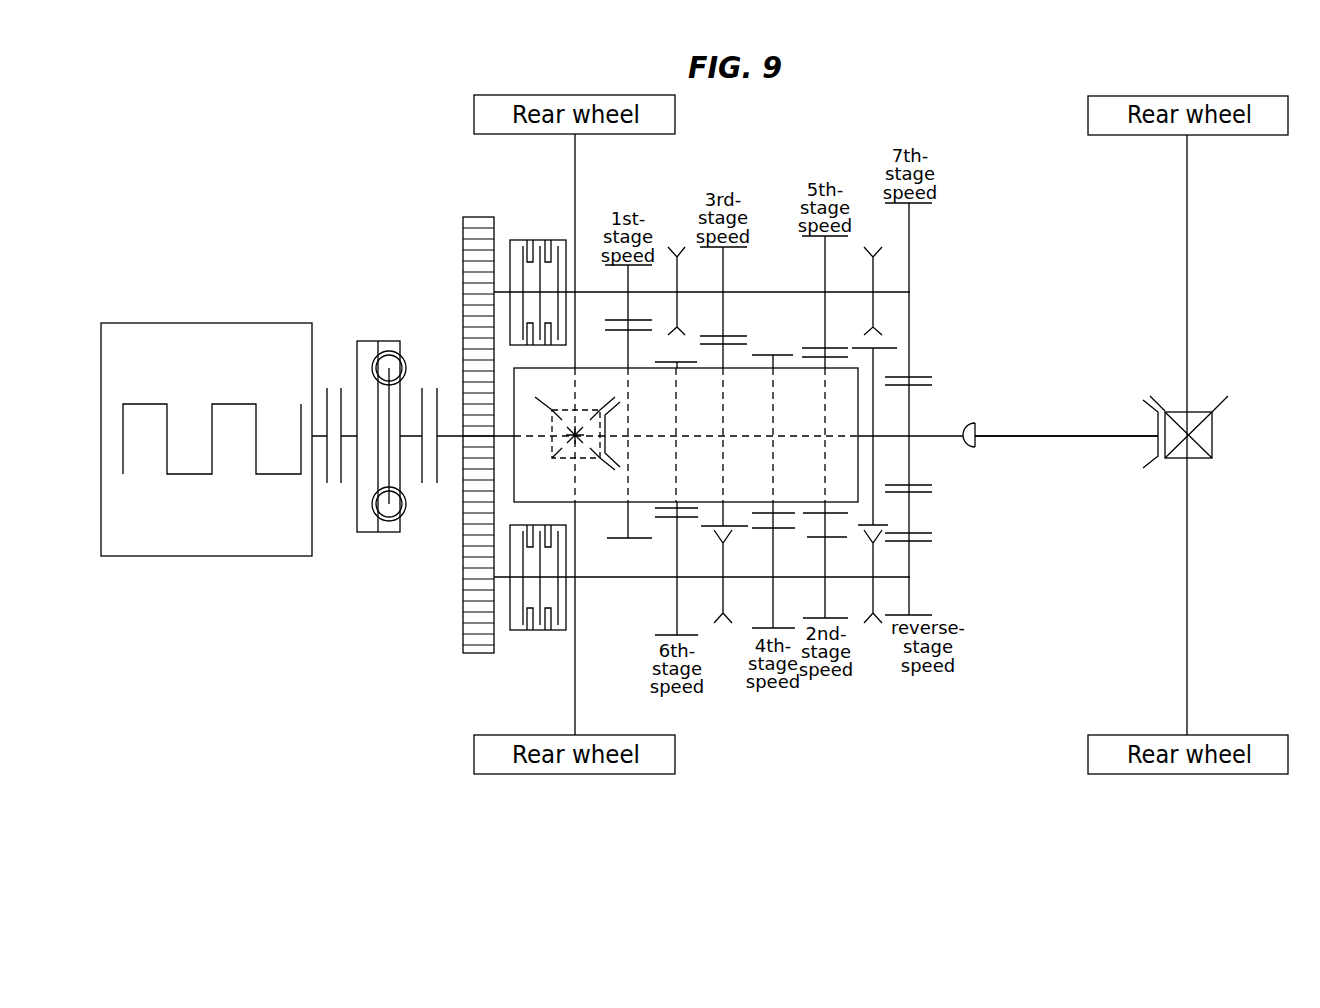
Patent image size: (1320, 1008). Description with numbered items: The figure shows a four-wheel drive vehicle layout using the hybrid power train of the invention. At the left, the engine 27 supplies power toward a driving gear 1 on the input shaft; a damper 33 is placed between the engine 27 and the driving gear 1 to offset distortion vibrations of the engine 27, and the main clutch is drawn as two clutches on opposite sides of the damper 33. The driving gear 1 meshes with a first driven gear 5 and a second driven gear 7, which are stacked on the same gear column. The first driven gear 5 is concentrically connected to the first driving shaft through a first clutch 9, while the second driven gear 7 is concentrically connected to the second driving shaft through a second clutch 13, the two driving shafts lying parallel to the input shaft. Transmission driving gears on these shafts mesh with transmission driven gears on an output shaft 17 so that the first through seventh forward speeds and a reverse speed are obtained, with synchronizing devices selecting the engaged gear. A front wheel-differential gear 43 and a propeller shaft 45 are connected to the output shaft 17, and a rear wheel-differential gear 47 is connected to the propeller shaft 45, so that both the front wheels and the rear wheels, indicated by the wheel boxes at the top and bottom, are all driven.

The driving gear 1 is at (462, 385).
The first driven gear 5 is at (470, 216).
The second driven gear 7 is at (474, 640).
The first clutch 9 is at (535, 240).
The second clutch 13 is at (541, 632).
The output shaft 17 is at (943, 437).
The engine 27 is at (175, 556).
The damper 33 is at (377, 340).
The front wheel-differential gear 43 is at (598, 465).
The propeller shaft 45 is at (1103, 437).
The rear wheel-differential gear 47 is at (1213, 427).